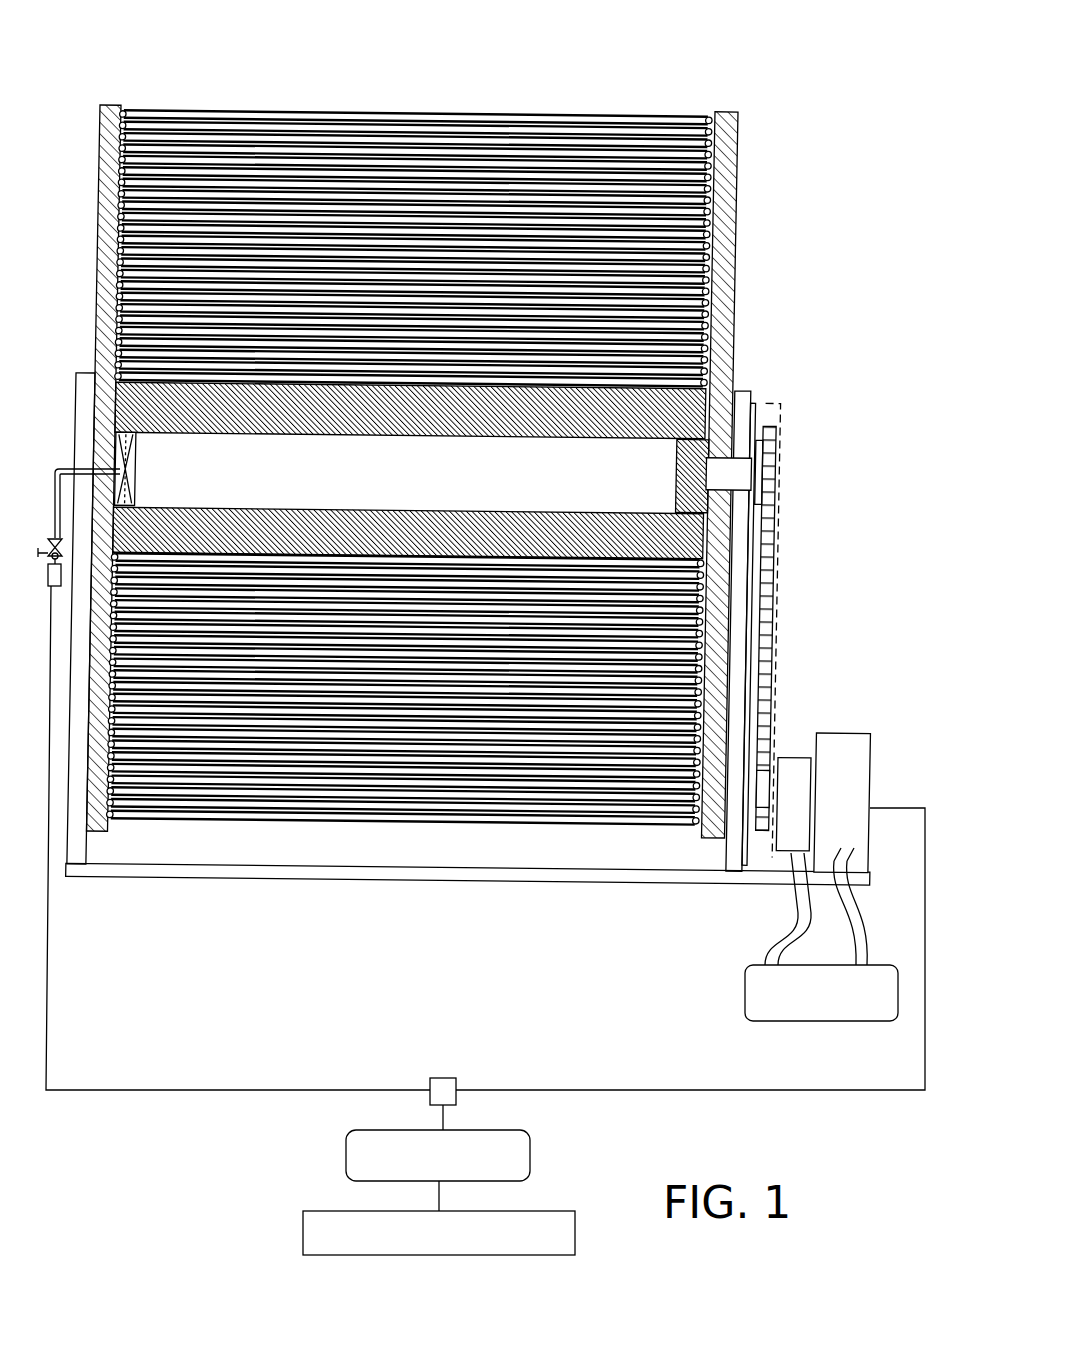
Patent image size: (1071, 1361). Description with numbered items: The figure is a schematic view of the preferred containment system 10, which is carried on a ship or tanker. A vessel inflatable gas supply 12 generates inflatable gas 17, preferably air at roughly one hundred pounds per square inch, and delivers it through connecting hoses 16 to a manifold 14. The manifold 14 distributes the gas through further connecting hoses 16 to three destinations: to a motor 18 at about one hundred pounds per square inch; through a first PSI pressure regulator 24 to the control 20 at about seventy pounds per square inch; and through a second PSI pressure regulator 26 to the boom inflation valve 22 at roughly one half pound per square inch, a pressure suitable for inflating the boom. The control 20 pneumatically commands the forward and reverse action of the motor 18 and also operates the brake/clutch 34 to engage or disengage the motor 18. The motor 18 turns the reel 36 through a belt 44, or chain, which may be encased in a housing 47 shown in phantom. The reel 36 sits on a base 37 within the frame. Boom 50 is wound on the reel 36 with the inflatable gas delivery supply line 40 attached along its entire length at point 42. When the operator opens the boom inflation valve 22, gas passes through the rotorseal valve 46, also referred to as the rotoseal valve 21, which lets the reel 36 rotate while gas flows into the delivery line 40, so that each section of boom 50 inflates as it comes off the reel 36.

The containment system 10 is at (775, 128).
The vessel inflatable gas supply 12 is at (546, 1222).
The manifold 14 is at (337, 1147).
The connecting hoses 16 is at (63, 462).
The inflatable gas 17 is at (592, 1082).
The motor 18 is at (835, 742).
The control 20 is at (882, 975).
The rotoseal valve 21 is at (127, 460).
The boom inflation valve 22 is at (42, 535).
The first PSI pressure regulator 24 is at (436, 1078).
The second PSI pressure regulator 26 is at (42, 578).
The brake/clutch 34 is at (783, 750).
The reel 36 is at (103, 97).
The base 37 is at (110, 855).
The inflatable gas delivery supply line 40 is at (118, 115).
The attachment point 42 is at (67, 370).
The belt 44 is at (765, 462).
The rotorseal valve 46 is at (127, 485).
The housing 47 is at (765, 395).
The boom 50 is at (410, 419).